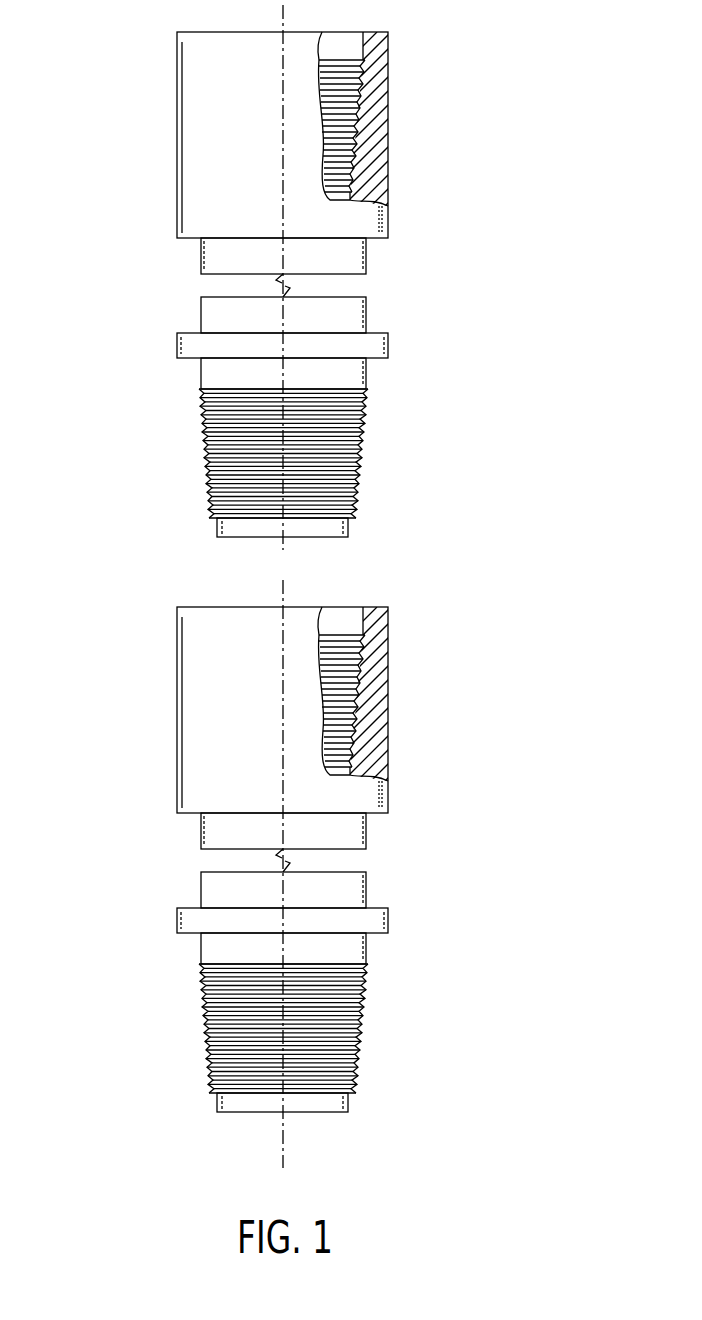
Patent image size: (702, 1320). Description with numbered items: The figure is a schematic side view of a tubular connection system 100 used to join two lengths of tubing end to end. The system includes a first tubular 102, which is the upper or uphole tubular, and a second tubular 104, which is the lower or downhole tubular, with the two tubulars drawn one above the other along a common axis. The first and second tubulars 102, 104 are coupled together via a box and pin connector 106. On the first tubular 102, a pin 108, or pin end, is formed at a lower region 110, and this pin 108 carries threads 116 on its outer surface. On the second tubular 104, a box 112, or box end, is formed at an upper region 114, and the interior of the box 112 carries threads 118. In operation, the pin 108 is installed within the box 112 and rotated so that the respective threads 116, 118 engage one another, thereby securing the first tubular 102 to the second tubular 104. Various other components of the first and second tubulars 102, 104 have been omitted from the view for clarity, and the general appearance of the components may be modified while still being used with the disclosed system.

The tubular connection system 100 is at (337, 284).
The first tubular 102 is at (225, 317).
The second tubular 104 is at (241, 880).
The box and pin connector 106 is at (337, 463).
The pin 108 is at (440, 418).
The lower region 110 is at (269, 455).
The box 112 is at (368, 710).
The upper region 114 is at (298, 710).
The threads 116 is at (357, 474).
The threads 118 is at (385, 701).